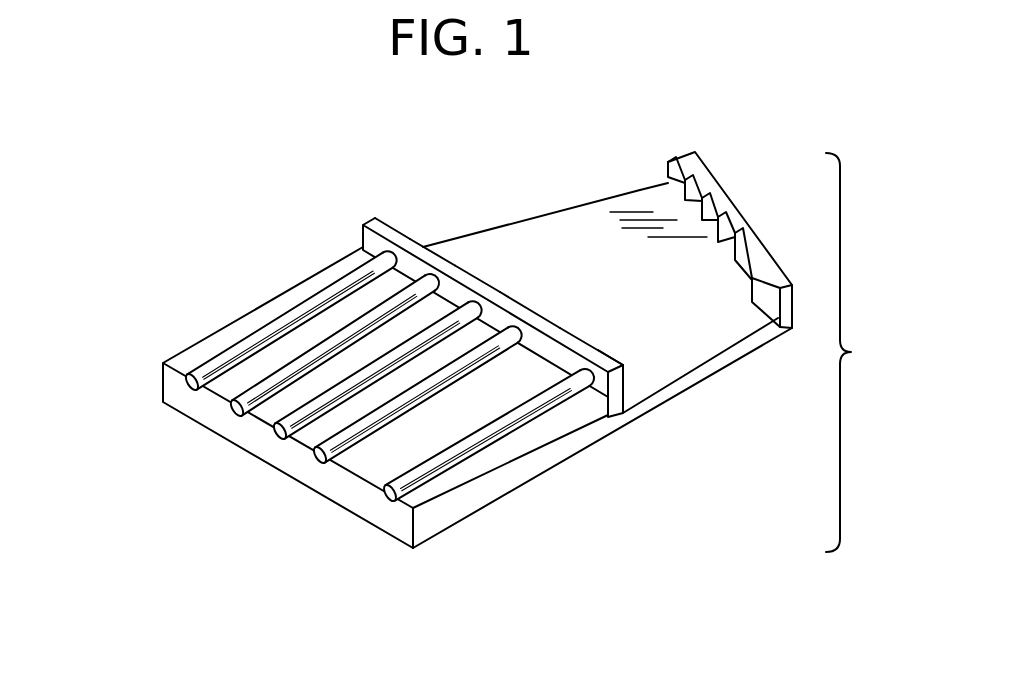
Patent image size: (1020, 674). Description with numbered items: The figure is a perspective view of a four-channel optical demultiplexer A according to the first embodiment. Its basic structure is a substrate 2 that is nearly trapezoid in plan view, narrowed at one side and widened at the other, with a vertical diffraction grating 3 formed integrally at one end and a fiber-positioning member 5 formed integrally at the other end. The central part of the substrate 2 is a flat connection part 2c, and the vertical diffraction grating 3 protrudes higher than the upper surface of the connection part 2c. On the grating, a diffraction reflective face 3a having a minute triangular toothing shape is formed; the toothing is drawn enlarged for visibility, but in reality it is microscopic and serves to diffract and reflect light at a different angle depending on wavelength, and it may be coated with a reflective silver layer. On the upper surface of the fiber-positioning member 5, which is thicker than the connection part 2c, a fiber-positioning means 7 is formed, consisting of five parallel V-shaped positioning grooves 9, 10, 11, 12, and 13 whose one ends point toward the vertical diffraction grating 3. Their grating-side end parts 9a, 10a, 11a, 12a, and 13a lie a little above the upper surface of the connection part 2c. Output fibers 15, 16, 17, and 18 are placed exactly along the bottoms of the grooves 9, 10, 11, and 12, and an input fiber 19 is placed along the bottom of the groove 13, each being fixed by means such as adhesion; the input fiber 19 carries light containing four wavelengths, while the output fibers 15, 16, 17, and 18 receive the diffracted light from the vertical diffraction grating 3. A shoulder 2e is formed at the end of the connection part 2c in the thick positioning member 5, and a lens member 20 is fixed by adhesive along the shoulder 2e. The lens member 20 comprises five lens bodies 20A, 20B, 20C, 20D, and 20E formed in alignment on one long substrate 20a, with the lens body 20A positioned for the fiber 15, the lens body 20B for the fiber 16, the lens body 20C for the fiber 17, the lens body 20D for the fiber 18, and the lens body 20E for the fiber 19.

The substrate 2 is at (606, 236).
The connection part 2c is at (662, 204).
The shoulder 2e is at (623, 413).
The vertical diffraction grating 3 is at (740, 214).
The diffraction reflective face 3a is at (752, 278).
The fiber-positioning member 5 is at (448, 512).
The fiber-positioning means 7 is at (172, 381).
The positioning groove 9 is at (180, 394).
The end part of positioning groove 9a is at (388, 252).
The positioning groove 10 is at (243, 416).
The end part of positioning groove 10a is at (432, 276).
The positioning groove 11 is at (285, 441).
The end part of positioning groove 11a is at (487, 296).
The positioning groove 12 is at (322, 464).
The end part of positioning groove 12a is at (545, 343).
The positioning groove 13 is at (392, 503).
The end part of positioning groove 13a is at (588, 394).
The output fiber 15 is at (266, 307).
The output fiber 16 is at (326, 339).
The output fiber 17 is at (395, 376).
The output fiber 18 is at (445, 385).
The input fiber 19 is at (474, 478).
The lens member 20 is at (598, 337).
The lens body 20A is at (362, 228).
The lens body 20B is at (430, 246).
The lens body 20C is at (490, 272).
The lens body 20D is at (537, 330).
The lens body 20E is at (652, 402).
The long substrate 20a is at (596, 352).
The optical demultiplexer A is at (853, 352).